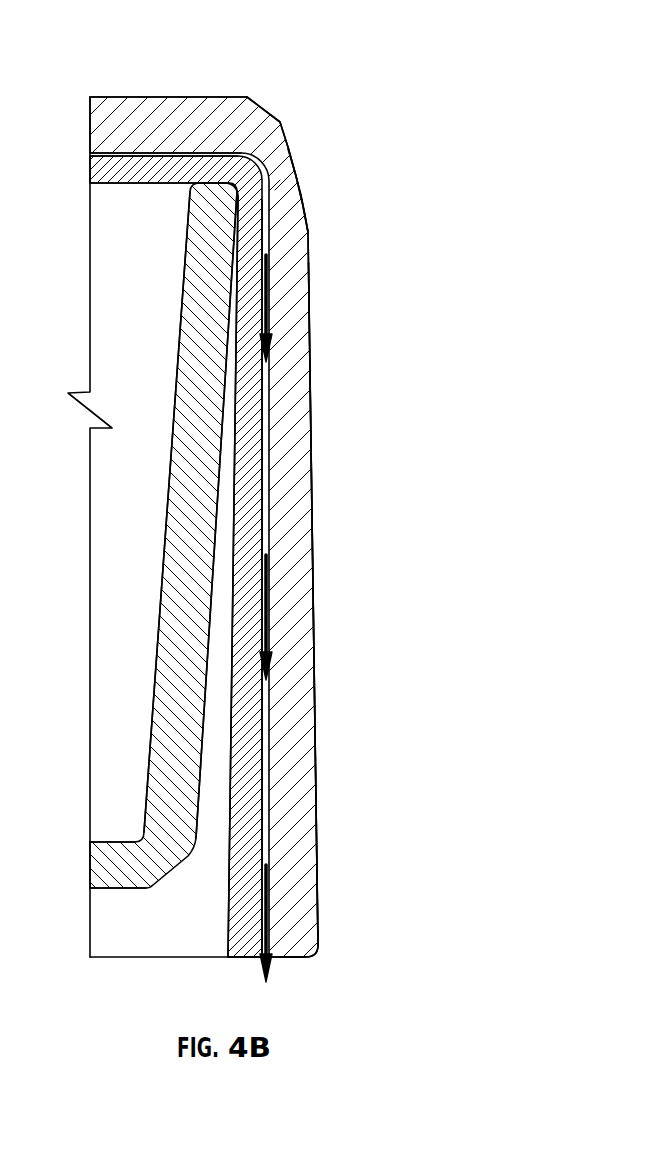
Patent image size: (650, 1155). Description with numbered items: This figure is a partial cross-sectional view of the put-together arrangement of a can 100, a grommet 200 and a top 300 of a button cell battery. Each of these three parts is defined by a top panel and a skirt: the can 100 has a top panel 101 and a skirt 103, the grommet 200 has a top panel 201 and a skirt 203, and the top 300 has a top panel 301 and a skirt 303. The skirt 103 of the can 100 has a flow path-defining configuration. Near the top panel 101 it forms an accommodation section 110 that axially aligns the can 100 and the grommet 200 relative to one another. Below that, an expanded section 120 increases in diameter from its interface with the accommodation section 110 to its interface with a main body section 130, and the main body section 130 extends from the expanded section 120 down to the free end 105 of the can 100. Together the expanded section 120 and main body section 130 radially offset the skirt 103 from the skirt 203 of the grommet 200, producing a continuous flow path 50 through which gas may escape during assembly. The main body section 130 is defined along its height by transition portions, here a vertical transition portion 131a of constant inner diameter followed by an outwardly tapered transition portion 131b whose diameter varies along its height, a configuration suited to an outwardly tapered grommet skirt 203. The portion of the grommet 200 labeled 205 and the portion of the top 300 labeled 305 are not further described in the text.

The can 100 is at (297, 78).
The top panel 101 is at (143, 107).
The skirt 103 is at (283, 177).
The free end 105 is at (300, 947).
The accommodation section 110 is at (337, 148).
The expanded section 120 is at (337, 197).
The main body section 130 is at (403, 265).
The vertical transition portion 131a is at (337, 265).
The outwardly tapered transition portion 131b is at (337, 547).
The flow path 50 is at (265, 313).
The grommet 200 is at (78, 198).
The top panel 201 is at (97, 170).
The skirt 203 is at (230, 660).
The liner bottom end 205 is at (240, 957).
The top 300 is at (75, 845).
The top panel 301 is at (115, 880).
The skirt 303 is at (178, 402).
The insert top 305 is at (208, 204).